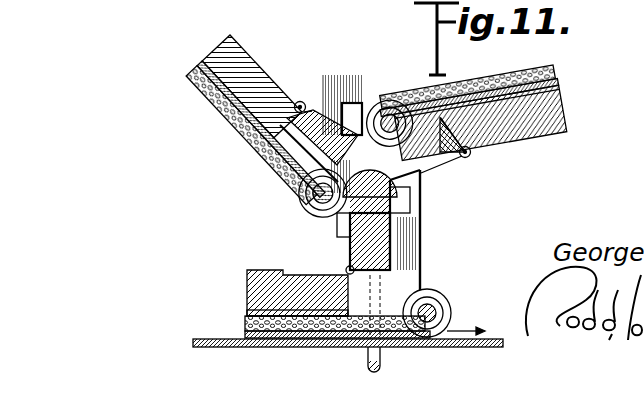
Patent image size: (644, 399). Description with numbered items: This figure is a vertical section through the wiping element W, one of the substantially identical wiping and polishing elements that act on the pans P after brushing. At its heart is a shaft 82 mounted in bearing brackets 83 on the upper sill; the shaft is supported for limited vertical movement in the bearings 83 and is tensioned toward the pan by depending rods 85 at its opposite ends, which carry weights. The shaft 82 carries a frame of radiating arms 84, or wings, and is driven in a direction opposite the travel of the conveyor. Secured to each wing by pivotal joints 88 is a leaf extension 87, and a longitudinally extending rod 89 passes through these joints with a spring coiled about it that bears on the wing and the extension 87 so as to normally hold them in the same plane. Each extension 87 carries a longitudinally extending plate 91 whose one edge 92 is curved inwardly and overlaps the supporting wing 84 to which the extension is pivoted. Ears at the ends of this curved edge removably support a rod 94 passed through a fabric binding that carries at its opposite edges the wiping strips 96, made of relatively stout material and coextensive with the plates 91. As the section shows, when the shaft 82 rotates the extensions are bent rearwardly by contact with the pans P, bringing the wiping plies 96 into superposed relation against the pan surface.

The shaft 82 is at (355, 98).
The bearing brackets 83 is at (418, 251).
The radiating arms 84 is at (309, 102).
The depending rods 85 is at (381, 367).
The leaf extensions 87 is at (224, 60).
The pivotal joints 88 is at (468, 157).
The longitudinally extending rod 89 is at (300, 102).
The longitudinally extending plate 91 is at (562, 82).
The inwardly curved edge 92 is at (395, 88).
The rod 94 is at (440, 87).
The wiping strips 96 is at (248, 161).
The wiping element W is at (450, 168).
The pans P is at (475, 331).